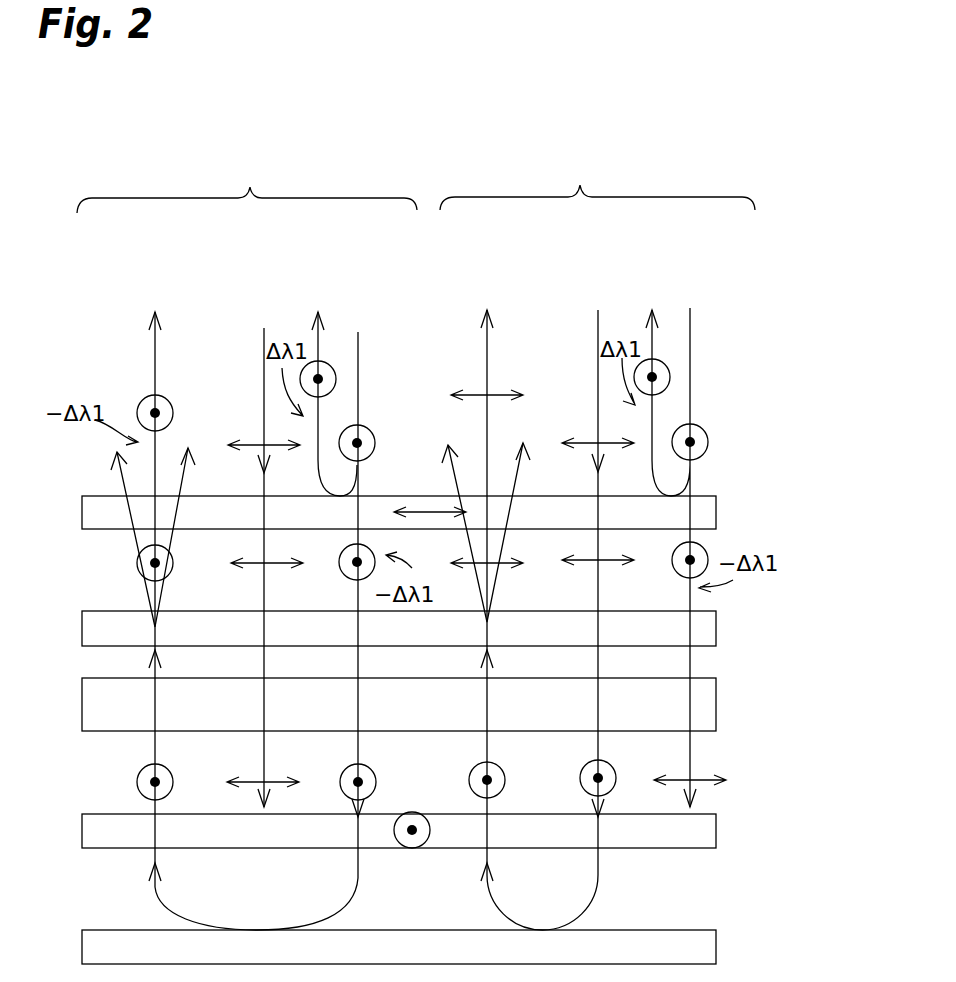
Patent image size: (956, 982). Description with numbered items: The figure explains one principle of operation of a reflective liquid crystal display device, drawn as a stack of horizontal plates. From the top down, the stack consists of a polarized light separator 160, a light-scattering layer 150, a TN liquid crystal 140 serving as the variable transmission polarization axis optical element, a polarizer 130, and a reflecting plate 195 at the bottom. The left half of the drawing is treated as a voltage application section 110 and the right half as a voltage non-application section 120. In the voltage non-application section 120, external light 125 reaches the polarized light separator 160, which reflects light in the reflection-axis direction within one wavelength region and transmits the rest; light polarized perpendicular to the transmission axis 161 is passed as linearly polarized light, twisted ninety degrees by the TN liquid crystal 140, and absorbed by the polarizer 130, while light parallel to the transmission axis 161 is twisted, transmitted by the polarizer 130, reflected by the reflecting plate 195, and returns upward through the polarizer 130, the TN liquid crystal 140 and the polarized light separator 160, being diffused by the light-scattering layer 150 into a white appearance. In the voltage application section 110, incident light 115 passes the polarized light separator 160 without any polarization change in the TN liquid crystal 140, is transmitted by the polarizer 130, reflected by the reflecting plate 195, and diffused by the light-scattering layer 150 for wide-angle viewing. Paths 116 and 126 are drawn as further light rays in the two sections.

The voltage application section 110 is at (247, 181).
The voltage non-application section 120 is at (597, 178).
The incident light 115 is at (357, 332).
The optical path 116 is at (148, 342).
The light incident as external light 125 is at (690, 320).
The optical path 126 is at (490, 327).
The transmission axis 161 is at (426, 512).
The polarized light separator 160 is at (703, 513).
The light-scattering layer 150 is at (707, 628).
The TN liquid crystal 140 is at (707, 712).
The polarizer 130 is at (708, 828).
The reflecting plate 195 is at (702, 947).